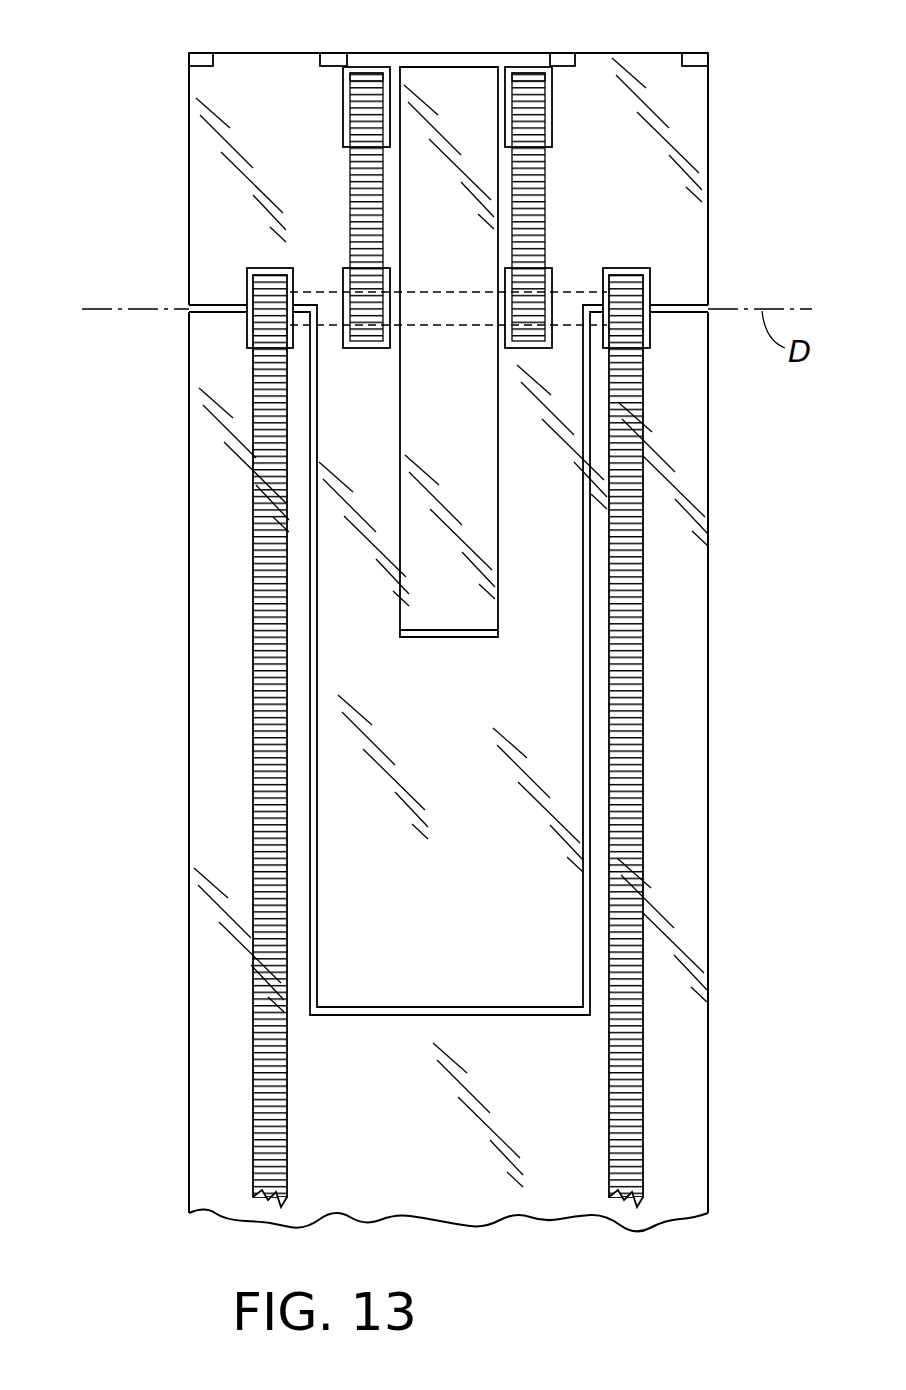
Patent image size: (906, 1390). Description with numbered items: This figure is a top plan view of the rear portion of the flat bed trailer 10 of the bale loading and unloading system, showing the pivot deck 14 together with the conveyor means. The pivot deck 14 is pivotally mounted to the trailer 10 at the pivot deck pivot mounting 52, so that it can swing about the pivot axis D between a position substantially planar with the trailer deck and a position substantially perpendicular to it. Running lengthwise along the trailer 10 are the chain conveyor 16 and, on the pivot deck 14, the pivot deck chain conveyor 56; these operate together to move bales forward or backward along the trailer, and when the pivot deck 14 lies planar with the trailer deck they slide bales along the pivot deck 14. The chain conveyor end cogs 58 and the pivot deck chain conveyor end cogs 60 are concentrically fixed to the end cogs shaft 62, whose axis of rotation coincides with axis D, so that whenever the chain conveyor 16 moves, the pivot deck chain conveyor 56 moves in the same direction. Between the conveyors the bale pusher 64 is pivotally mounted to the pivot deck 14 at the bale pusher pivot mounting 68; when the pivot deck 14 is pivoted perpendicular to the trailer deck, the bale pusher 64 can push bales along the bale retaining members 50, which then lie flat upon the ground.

The flat bed trailer 10 is at (327, 1143).
The pivot deck 14 is at (450, 660).
The chain conveyor 16 is at (283, 1055).
The bale retaining members 50 is at (333, 62).
The pivot deck pivot mounting 52 is at (229, 327).
The pivot deck chain conveyor 56 is at (356, 201).
The chain conveyor end cogs 58 is at (247, 292).
The lower brackets 60 is at (507, 333).
The end cogs shaft 62 is at (470, 290).
The bale pusher 64 is at (482, 494).
The bale pusher pivot mounting 68 is at (455, 633).